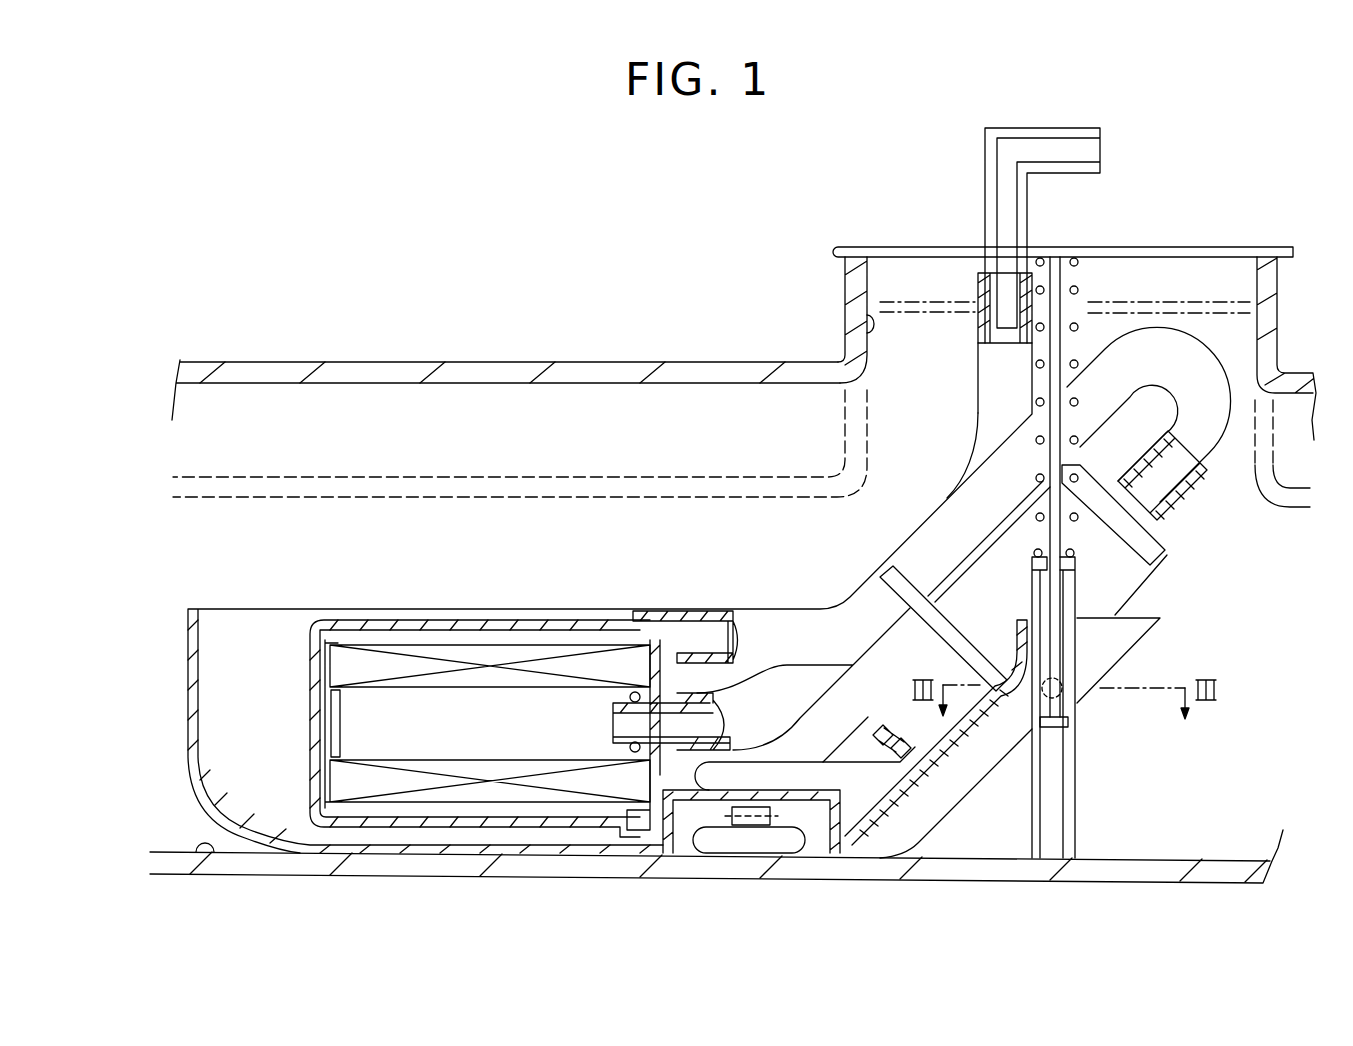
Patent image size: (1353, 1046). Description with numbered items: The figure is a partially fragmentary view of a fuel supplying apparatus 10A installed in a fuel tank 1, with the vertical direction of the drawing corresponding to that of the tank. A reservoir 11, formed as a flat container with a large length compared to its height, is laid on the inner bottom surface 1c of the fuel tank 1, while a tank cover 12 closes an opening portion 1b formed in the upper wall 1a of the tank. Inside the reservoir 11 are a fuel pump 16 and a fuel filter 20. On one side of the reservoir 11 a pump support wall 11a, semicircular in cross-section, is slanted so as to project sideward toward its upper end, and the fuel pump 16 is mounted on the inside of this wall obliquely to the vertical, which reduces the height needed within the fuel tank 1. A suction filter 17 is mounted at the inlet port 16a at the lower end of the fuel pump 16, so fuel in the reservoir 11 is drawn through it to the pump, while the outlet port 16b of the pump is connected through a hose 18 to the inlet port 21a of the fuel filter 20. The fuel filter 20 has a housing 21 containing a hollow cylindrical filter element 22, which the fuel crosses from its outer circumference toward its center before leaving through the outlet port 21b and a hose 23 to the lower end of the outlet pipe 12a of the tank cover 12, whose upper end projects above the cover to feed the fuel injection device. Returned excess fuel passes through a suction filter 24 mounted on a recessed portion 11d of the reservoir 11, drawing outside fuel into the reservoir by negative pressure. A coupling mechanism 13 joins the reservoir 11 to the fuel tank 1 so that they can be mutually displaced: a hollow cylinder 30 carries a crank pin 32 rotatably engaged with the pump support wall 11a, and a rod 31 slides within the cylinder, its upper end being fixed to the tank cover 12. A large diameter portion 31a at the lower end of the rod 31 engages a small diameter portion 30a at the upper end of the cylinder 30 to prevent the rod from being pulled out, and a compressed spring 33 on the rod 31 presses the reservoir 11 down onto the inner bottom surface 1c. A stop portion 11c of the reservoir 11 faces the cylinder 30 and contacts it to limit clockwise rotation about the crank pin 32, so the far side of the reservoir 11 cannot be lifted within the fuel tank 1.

The fuel tank 1 is at (330, 362).
The upper wall 1a is at (552, 372).
The opening portion 1b is at (873, 322).
The inner bottom surface 1c is at (197, 860).
The fuel supplying apparatus 10A is at (1210, 734).
The reservoir 11 is at (260, 608).
The pump support wall 11a is at (948, 805).
The stop portion 11c is at (1012, 648).
The recessed portion 11d is at (826, 830).
The tank cover 12 is at (833, 247).
The outlet pipe 12a is at (985, 190).
The coupling mechanism 13 is at (1088, 340).
The fuel pump 16 is at (975, 578).
The inlet port 16a is at (857, 745).
The outlet port 16b is at (1165, 462).
The suction filter 17 is at (872, 780).
The hose 18 is at (943, 525).
The fuel filter 20 is at (538, 610).
The housing 21 is at (400, 620).
The inlet port 21a is at (668, 612).
The outlet port 21b is at (757, 612).
The filter element 22 is at (483, 655).
The hose 23 is at (985, 428).
The suction filter 24 is at (737, 850).
The cylinder 30 is at (1077, 785).
The small diameter portion 30a is at (1143, 587).
The rod 31 is at (1055, 632).
The large diameter portion 31a is at (1063, 722).
The crank pin 32 is at (1060, 700).
The spring 33 is at (1082, 290).